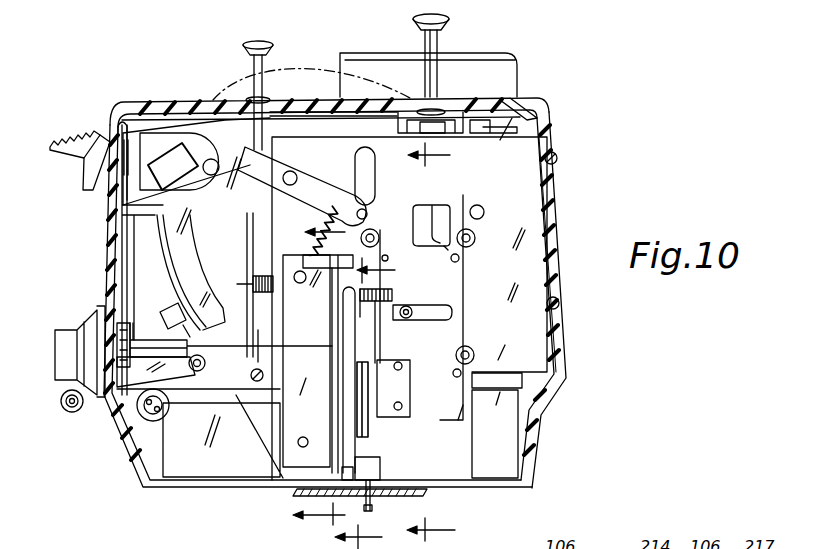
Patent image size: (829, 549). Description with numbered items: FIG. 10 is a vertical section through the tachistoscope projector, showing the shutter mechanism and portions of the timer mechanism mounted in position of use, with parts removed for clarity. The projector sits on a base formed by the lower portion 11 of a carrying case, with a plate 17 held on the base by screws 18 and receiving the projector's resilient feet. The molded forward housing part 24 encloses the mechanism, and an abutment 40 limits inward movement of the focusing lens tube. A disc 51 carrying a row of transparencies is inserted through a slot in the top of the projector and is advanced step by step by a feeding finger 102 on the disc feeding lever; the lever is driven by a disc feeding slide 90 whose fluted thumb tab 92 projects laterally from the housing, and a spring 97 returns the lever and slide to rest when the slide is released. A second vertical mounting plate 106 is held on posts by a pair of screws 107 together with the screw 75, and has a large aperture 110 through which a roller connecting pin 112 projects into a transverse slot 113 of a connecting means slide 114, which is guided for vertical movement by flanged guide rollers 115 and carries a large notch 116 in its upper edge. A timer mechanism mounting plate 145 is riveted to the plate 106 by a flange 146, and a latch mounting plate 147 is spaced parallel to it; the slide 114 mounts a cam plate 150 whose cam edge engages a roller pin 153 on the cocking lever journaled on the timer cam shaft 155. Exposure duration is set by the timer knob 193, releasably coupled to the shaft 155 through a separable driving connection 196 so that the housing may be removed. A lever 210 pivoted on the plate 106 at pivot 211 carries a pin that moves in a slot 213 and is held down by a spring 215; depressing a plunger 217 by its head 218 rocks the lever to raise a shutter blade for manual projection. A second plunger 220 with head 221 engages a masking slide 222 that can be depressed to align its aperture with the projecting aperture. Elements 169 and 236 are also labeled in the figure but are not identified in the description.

The lower portion of carrying case 11 is at (443, 342).
The plate 17 is at (305, 491).
The screws 18 is at (316, 382).
The forward housing part 24 is at (567, 350).
The abutment 40 is at (484, 212).
The disc 51 is at (305, 75).
The screw 75 is at (200, 433).
The disc feeding slide 90 is at (122, 206).
The thumb tab 92 is at (78, 135).
The spring 97 is at (245, 283).
The feeding finger 102 is at (180, 266).
The second vertical plate 106 is at (556, 222).
The screws 107 is at (557, 158).
The large aperture 110 is at (441, 205).
The roller connecting pin 112 is at (410, 307).
The transverse slot 113 is at (452, 314).
The connecting means slide 114 is at (465, 283).
The flanged guide rollers 115 is at (373, 229).
The large notch 116 is at (443, 250).
The timer mechanism mounting plate 145 is at (330, 420).
The flange 146 is at (257, 382).
The latch mounting plate 147 is at (343, 292).
The cam plate 150 is at (380, 389).
The roller pin 153 is at (378, 302).
The timer cam shaft 155 is at (261, 338).
The guide block 169 is at (378, 457).
The timer knob 193 is at (70, 332).
The separable driving connection 196 is at (141, 333).
The lever 210 is at (343, 156).
The pivot 211 is at (290, 171).
The slot 213 is at (378, 173).
The spring 215 is at (300, 260).
The plunger 217 is at (250, 72).
The head 218 is at (263, 44).
The second plunger 220 is at (440, 47).
The head 221 is at (446, 16).
The masking slide 222 is at (407, 125).
The roller 236 is at (70, 412).